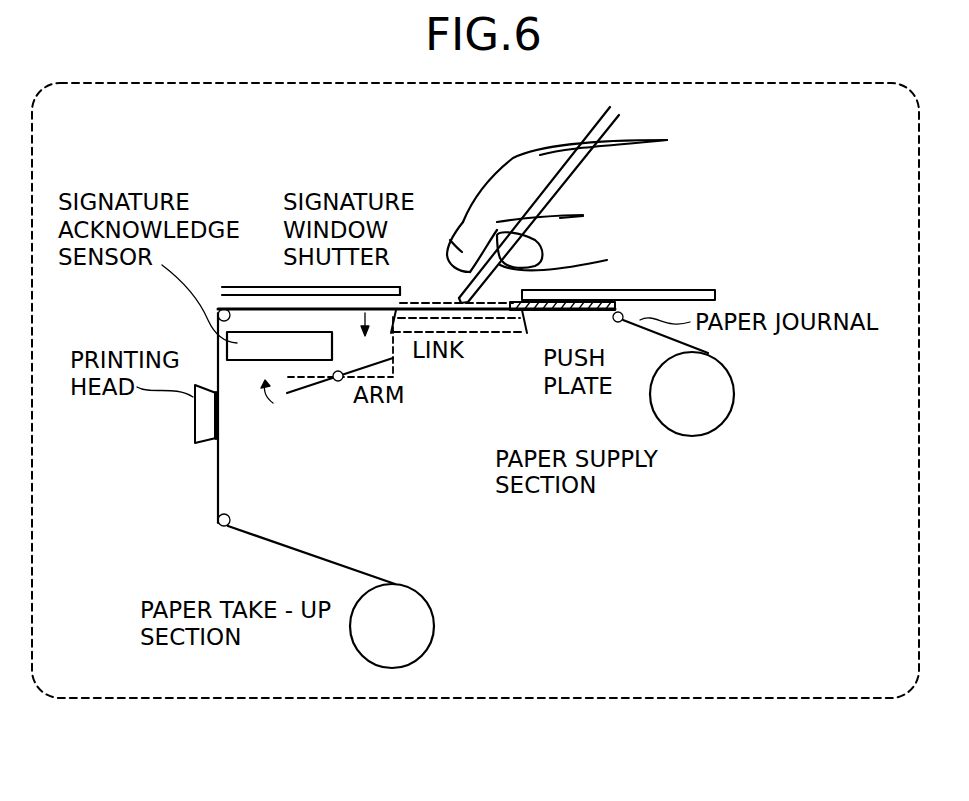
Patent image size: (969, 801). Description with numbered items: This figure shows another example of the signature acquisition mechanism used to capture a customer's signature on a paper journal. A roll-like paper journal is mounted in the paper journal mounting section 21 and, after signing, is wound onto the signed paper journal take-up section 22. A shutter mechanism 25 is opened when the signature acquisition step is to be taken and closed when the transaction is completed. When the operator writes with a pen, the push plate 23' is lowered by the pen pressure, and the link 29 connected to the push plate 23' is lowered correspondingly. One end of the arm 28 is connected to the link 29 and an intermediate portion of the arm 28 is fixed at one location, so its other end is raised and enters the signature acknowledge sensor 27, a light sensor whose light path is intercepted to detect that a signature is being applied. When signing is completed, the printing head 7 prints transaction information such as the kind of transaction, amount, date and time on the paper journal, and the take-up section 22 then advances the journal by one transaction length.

The printing head 7 is at (192, 415).
The paper journal mounting section 21 is at (688, 437).
The signed paper journal take-up section 22 is at (433, 625).
The push plate 23' is at (378, 349).
The shutter mechanism 25 is at (605, 295).
The signature acknowledge sensor 27 is at (243, 363).
The arm 28 is at (313, 380).
The link 29 is at (427, 362).